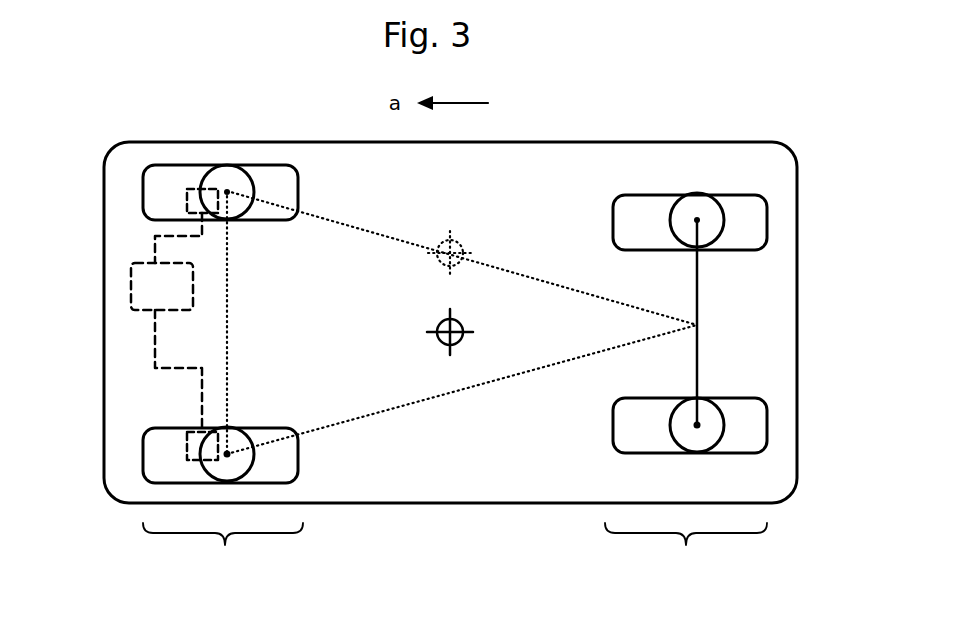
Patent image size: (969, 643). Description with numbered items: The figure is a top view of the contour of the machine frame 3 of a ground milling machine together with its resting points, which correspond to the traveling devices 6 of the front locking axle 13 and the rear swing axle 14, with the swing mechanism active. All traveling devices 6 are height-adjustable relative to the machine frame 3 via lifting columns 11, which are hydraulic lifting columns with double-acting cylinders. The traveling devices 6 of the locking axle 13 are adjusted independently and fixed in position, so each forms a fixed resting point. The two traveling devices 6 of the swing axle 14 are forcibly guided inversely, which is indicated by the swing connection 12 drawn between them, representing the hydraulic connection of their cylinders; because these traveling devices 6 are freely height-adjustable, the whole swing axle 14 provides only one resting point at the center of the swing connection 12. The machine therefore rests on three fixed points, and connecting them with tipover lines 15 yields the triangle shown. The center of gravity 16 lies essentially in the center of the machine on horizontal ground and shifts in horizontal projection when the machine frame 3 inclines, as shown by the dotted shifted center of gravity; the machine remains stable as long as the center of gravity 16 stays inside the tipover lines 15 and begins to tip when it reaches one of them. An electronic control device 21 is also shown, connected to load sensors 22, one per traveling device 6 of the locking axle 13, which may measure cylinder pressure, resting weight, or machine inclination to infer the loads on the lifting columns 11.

The machine frame 3 is at (628, 142).
The traveling devices 6 is at (172, 185).
The lifting columns 11 is at (222, 177).
The swing connection 12 is at (698, 355).
The locking axle 13 is at (223, 550).
The swing axle 14 is at (686, 550).
The tipover lines 15 is at (337, 222).
The center of gravity 16 is at (455, 327).
The electronic control device 21 is at (163, 287).
The load sensors 22 is at (188, 202).